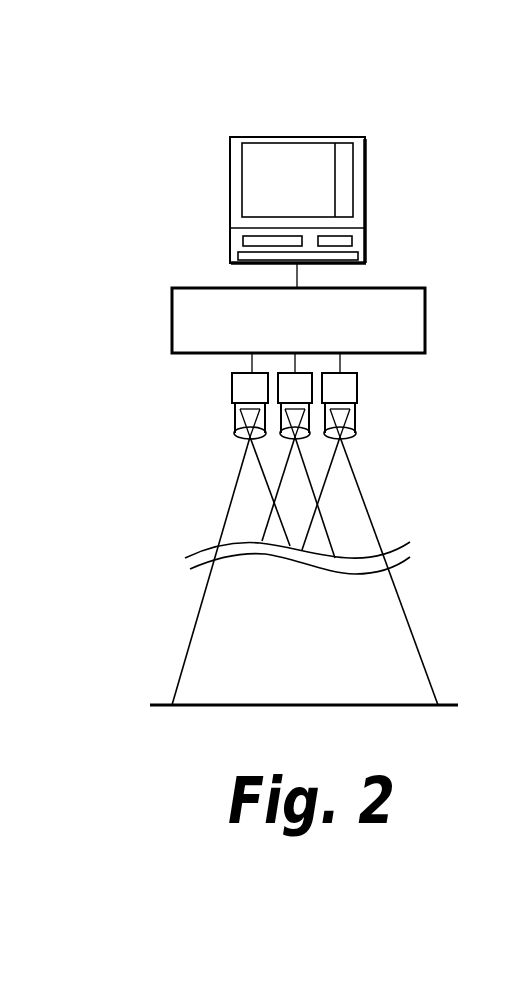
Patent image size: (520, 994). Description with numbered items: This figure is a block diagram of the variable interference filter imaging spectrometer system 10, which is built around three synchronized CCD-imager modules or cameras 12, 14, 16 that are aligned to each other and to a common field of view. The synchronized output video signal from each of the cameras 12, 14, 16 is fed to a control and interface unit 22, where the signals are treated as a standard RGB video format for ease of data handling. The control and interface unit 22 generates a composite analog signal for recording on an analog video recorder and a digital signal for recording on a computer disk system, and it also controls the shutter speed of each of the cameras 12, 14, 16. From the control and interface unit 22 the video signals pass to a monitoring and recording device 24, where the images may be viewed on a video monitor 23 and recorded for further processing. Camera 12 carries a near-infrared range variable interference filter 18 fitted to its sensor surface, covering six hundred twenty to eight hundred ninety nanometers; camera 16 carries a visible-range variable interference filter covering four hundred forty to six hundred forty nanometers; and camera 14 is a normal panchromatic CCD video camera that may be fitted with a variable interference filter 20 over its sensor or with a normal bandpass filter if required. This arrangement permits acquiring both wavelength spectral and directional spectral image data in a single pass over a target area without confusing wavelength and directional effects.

The variable interference filter imaging spectrometer (VIFIS) system 10 is at (478, 143).
The camera 12 is at (247, 385).
The camera 14 is at (355, 380).
The camera 16 is at (298, 390).
The near-infrared range variable interference filter 18 is at (243, 418).
The variable interference filter 20 is at (353, 415).
The control and interface unit 22 is at (427, 313).
The video monitor 23 is at (253, 186).
The monitoring and recording device 24 is at (273, 136).